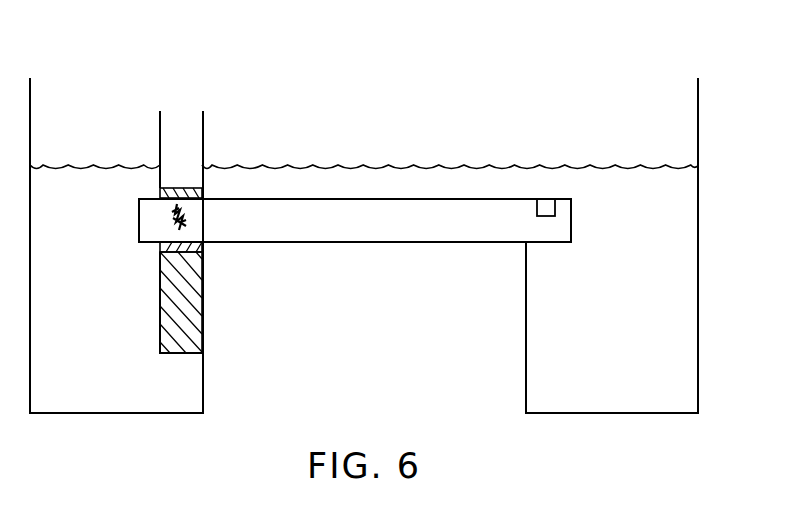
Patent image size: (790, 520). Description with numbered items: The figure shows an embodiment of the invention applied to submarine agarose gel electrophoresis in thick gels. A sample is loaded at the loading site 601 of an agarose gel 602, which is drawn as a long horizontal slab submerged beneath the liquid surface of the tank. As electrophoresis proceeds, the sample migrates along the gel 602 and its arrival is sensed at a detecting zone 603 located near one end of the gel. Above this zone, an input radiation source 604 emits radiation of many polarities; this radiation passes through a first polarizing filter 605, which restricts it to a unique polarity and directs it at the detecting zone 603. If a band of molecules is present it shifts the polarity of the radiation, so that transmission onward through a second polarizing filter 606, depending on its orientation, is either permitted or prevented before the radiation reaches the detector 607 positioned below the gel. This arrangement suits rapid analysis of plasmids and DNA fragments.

The loading site 601 is at (544, 206).
The agarose gel 602 is at (446, 215).
The detecting zone 603 is at (192, 223).
The input radiation source 604 is at (170, 160).
The first polarizing filter 605 is at (207, 193).
The lower seal 606 is at (202, 247).
The detector 607 is at (195, 313).